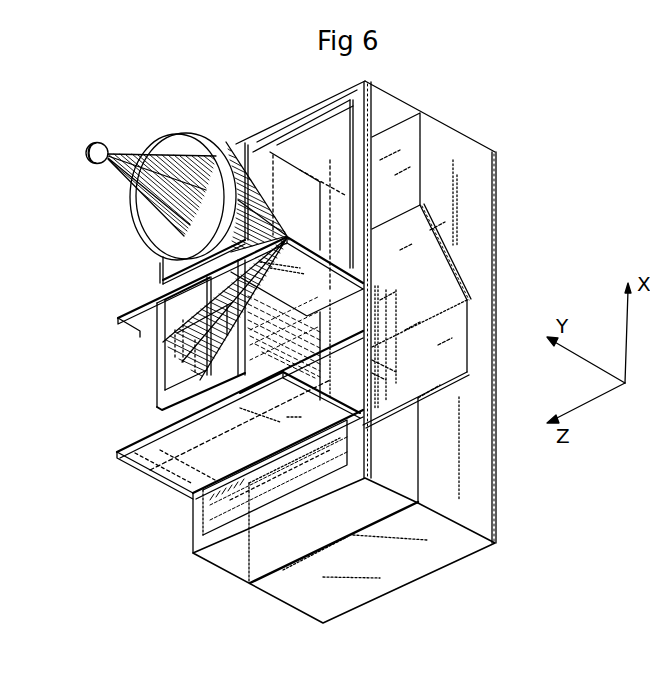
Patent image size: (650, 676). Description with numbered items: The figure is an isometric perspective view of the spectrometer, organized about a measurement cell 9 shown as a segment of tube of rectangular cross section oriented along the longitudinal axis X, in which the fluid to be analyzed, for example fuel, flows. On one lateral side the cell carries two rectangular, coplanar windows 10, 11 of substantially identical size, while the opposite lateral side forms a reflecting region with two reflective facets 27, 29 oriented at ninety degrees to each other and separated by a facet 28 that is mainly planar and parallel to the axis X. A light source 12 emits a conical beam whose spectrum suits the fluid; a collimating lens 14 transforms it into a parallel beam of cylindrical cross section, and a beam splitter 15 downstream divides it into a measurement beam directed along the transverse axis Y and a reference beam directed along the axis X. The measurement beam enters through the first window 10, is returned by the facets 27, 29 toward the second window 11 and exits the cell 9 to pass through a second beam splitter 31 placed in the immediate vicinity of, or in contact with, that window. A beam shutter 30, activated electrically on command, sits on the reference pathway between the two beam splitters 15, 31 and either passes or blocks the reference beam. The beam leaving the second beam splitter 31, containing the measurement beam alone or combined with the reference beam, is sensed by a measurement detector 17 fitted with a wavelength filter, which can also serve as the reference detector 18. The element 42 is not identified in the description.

The measurement cell 9 is at (507, 178).
The first window 10 is at (330, 171).
The second window 11 is at (420, 392).
The light source 12 is at (97, 167).
The collimating lens 14 is at (173, 152).
The beam splitter 15 is at (270, 148).
The measurement detector 17 is at (173, 358).
The reference detector 18 is at (185, 347).
The reflective facet 27 is at (434, 280).
The facet 28 is at (458, 328).
The reflective facet 29 is at (405, 400).
The beam shutter 30 is at (133, 305).
The second beam splitter 31 is at (157, 340).
The tray 42 is at (140, 441).